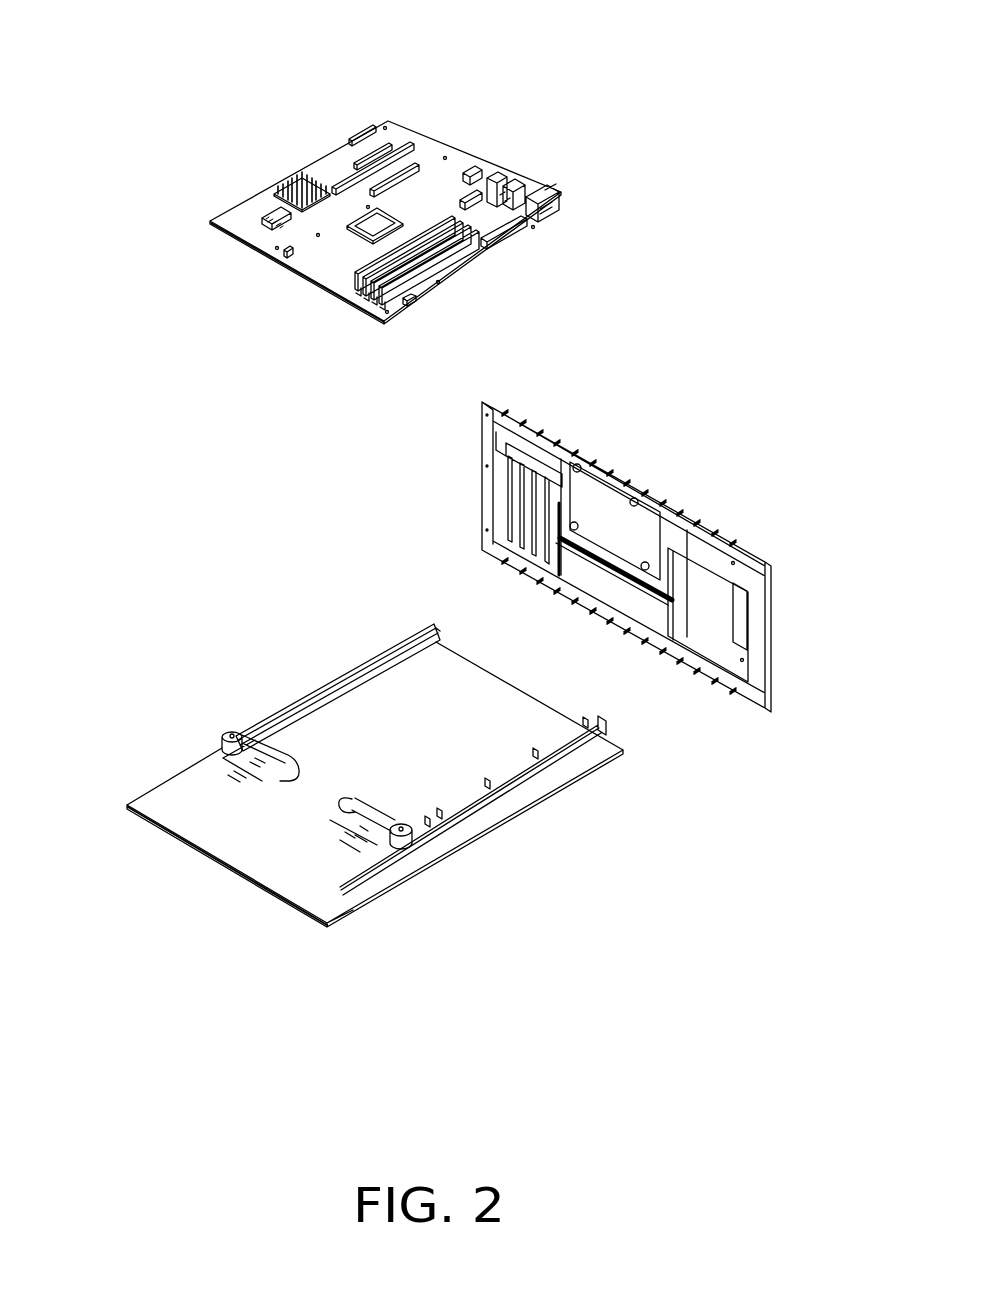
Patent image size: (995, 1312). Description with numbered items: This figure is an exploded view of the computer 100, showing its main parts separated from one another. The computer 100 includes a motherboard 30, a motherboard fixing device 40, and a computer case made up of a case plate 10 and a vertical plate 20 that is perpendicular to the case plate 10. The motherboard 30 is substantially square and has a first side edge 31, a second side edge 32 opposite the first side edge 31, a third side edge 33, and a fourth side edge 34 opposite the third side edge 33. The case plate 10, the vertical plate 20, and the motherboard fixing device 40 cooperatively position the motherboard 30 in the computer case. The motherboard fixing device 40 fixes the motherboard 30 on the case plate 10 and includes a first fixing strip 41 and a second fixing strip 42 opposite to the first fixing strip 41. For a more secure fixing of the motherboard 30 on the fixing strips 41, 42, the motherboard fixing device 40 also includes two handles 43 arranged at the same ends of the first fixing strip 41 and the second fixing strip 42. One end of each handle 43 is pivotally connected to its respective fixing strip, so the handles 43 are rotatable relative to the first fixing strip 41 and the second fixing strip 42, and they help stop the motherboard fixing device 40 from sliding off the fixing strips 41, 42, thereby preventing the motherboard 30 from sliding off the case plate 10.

The computer 100 is at (449, 29).
The case plate 10 is at (570, 767).
The vertical plate 20 is at (620, 470).
The motherboard 30 is at (385, 206).
The first side edge 31 is at (320, 160).
The second side edge 32 is at (473, 273).
The third side edge 33 is at (300, 280).
The fourth side edge 34 is at (458, 162).
The motherboard fixing device 40 is at (63, 728).
The first fixing strip 41 is at (238, 732).
The second fixing strip 42 is at (445, 846).
The handles 43 is at (222, 750).